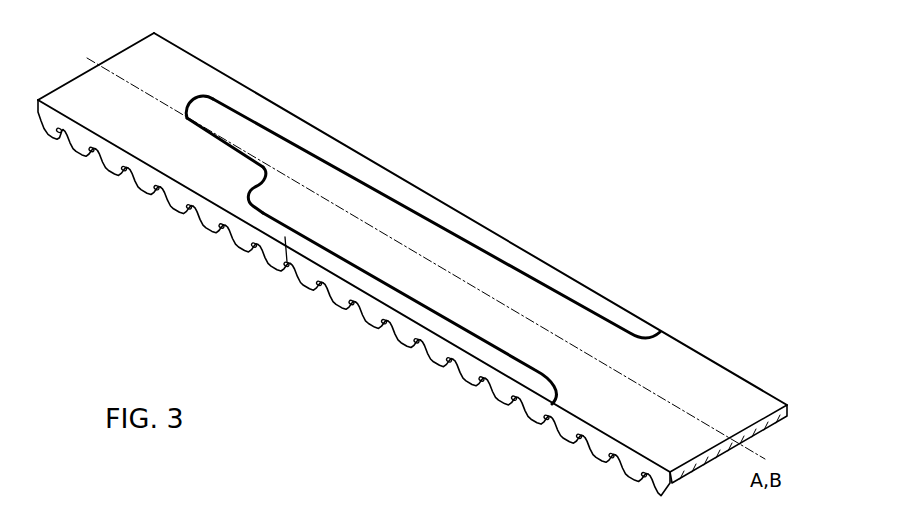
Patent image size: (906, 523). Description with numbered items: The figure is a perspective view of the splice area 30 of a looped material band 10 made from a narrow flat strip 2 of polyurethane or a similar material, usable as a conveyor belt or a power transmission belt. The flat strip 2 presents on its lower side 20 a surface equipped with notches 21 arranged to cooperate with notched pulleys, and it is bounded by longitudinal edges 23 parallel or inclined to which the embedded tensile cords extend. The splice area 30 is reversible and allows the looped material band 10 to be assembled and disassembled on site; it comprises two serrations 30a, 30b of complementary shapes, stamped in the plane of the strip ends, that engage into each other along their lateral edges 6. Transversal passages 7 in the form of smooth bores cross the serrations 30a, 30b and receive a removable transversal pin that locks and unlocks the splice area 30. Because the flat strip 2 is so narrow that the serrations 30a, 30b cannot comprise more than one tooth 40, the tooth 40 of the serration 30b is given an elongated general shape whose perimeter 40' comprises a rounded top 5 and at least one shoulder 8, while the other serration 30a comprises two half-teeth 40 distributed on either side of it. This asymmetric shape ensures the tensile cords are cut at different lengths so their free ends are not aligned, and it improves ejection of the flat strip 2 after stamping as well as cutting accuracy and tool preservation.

The looped material band 10 is at (93, 42).
The flat strip 2 is at (345, 145).
The rounded top 5 is at (183, 112).
The lateral wall of recess 6 is at (520, 361).
The transversal passages 7 is at (242, 243).
The shoulder 8 is at (258, 168).
The lower side 20 is at (335, 303).
The notches 21 is at (627, 462).
The longitudinal edges 23 is at (487, 362).
The splice area 30 is at (499, 218).
The serration 30a is at (538, 268).
The serration 30b is at (417, 238).
The tooth 40 is at (330, 223).
The perimeter 40' is at (388, 355).